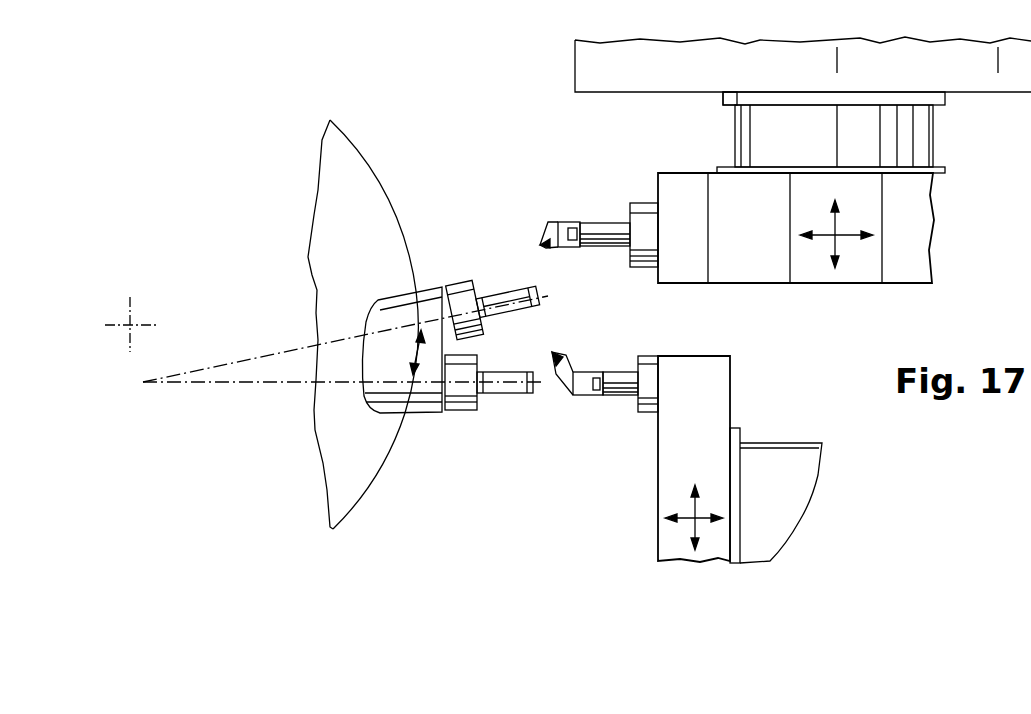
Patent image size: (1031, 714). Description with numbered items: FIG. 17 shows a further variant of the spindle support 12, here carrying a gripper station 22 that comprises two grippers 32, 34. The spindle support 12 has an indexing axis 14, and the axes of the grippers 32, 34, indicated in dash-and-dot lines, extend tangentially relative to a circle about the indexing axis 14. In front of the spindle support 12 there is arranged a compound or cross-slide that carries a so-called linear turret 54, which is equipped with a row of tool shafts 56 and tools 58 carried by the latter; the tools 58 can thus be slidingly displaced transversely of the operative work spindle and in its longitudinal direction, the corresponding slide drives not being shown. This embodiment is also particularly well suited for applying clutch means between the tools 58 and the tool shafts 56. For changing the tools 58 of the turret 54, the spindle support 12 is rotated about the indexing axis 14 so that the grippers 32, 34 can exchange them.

The spindle support 12 is at (386, 164).
The indexing axis 14 is at (132, 323).
The gripper station 22 is at (516, 336).
The gripper 32 is at (498, 297).
The gripper 34 is at (508, 390).
The linear turret 54 is at (821, 302).
The tool shaft 56 is at (610, 222).
The tool 58 is at (563, 222).